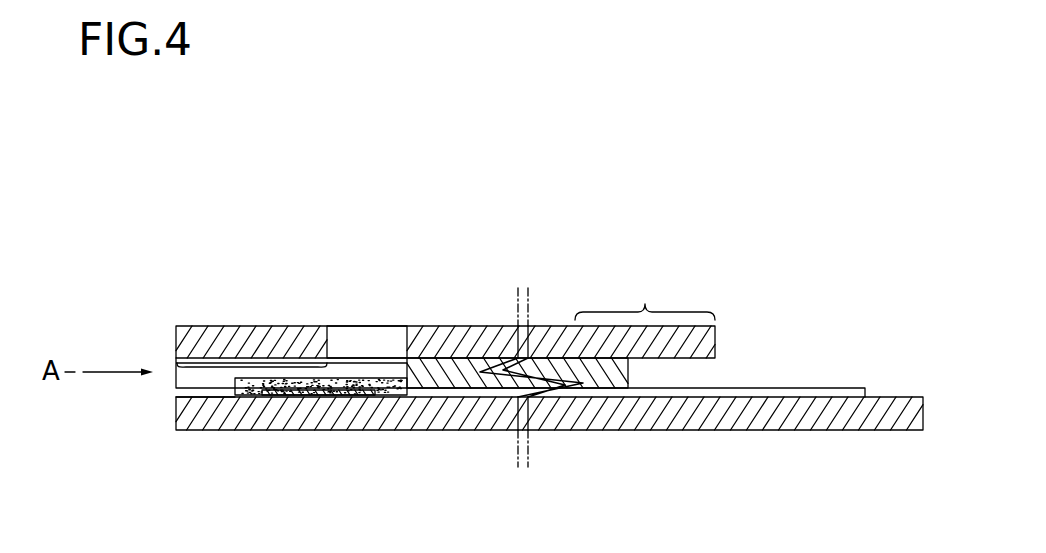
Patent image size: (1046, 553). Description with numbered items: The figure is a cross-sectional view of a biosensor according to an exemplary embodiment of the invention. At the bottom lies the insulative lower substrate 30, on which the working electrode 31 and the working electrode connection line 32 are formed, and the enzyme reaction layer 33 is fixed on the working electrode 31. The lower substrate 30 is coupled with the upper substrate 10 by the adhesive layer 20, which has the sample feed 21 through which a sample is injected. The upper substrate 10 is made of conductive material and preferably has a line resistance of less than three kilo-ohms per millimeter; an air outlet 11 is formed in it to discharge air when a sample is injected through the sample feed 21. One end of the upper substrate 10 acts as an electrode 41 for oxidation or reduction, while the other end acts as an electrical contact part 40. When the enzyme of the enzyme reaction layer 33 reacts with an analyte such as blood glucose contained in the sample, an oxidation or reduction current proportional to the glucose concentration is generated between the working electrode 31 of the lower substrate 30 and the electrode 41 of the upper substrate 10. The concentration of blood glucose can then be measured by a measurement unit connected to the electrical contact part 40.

The upper substrate 10 is at (233, 330).
The air outlet 11 is at (371, 340).
The adhesive layer 20 is at (632, 371).
The sample feed 21 is at (195, 380).
The lower substrate 30 is at (825, 420).
The working electrode 31 is at (351, 395).
The working electrode connection line 32 is at (840, 390).
The enzyme reaction layer 33 is at (211, 397).
The electrical contact part 40 is at (645, 315).
The electrode 41 is at (262, 378).